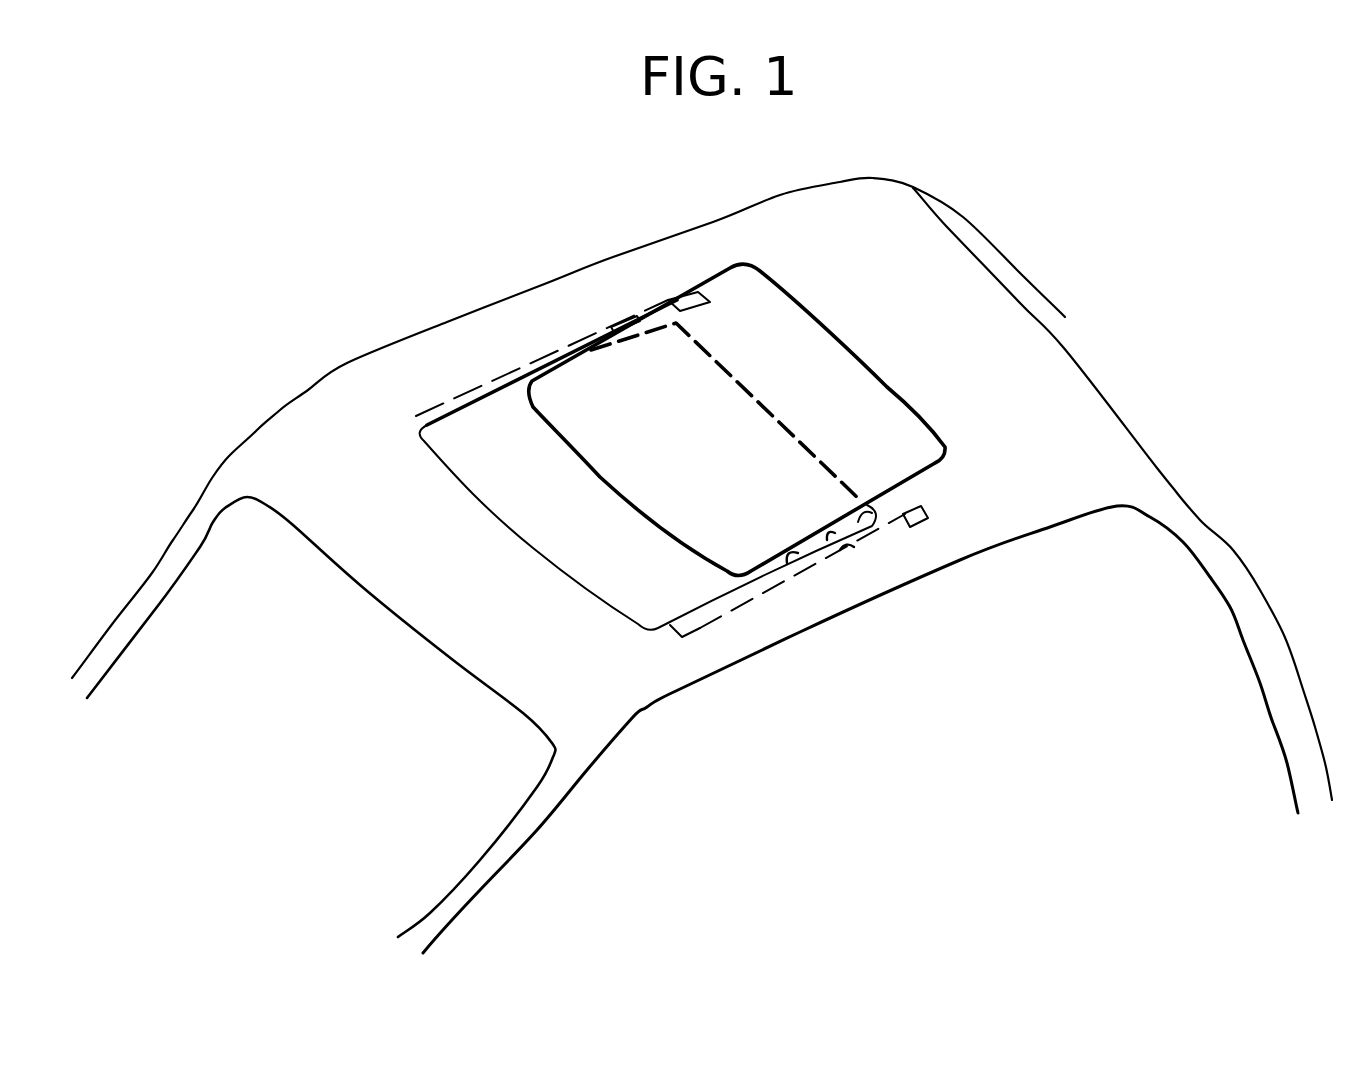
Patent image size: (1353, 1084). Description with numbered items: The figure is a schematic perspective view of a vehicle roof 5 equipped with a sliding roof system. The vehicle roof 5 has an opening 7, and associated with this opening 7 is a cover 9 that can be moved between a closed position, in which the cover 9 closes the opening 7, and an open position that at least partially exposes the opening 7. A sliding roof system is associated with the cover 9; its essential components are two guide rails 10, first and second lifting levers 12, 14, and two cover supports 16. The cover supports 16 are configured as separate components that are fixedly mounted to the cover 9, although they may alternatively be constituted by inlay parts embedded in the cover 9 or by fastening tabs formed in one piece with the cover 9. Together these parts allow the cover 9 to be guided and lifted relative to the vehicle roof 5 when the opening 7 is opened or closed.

The vehicle roof 5 is at (932, 252).
The opening 7 is at (531, 532).
The cover 9 is at (872, 407).
The guide rails 10 is at (714, 606).
The first lifting lever 12 is at (788, 572).
The second lifting lever 14 is at (846, 548).
The cover supports 16 is at (833, 533).